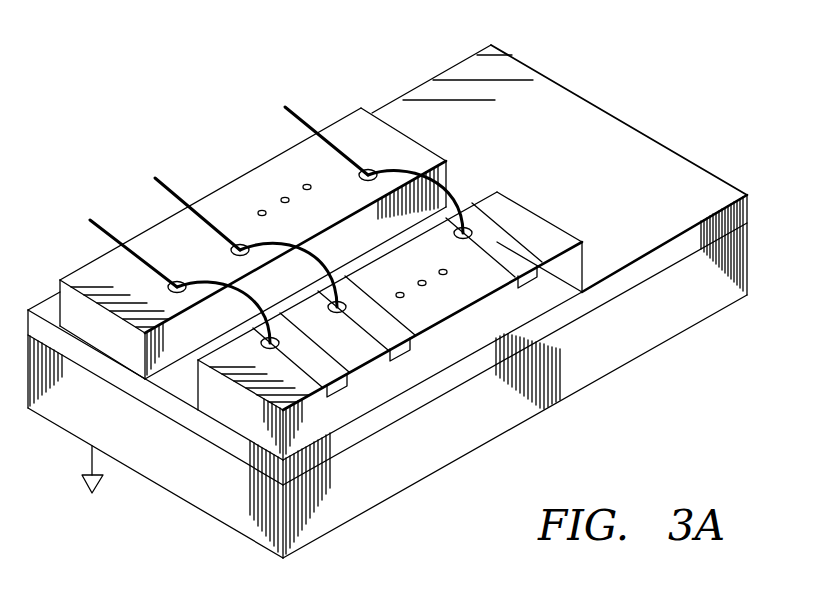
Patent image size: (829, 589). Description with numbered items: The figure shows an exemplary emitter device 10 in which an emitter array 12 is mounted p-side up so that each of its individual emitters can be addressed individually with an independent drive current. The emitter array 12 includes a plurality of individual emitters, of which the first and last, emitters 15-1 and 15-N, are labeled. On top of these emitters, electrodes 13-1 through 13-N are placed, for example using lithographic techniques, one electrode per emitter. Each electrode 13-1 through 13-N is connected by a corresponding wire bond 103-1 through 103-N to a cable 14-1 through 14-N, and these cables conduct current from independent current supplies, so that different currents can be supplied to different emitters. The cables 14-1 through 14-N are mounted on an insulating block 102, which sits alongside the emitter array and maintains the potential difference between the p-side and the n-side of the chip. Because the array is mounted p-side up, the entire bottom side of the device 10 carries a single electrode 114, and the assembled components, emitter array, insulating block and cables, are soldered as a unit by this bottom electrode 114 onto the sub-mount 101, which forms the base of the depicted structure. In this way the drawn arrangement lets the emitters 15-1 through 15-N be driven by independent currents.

The emitter device 10 is at (198, 78).
The emitter array 12 is at (238, 421).
The electrode 13-1 is at (355, 328).
The electrode 13-N is at (522, 258).
The cable 14-1 is at (92, 218).
The cable 14-N is at (288, 106).
The emitter 15-1 is at (332, 386).
The emitter 15-N is at (538, 268).
The sub-mount 101 is at (670, 323).
The insulating block 102 is at (76, 274).
The wire bond 103-1 is at (204, 284).
The wire bond 103-N is at (458, 196).
The electrode 114 is at (624, 128).